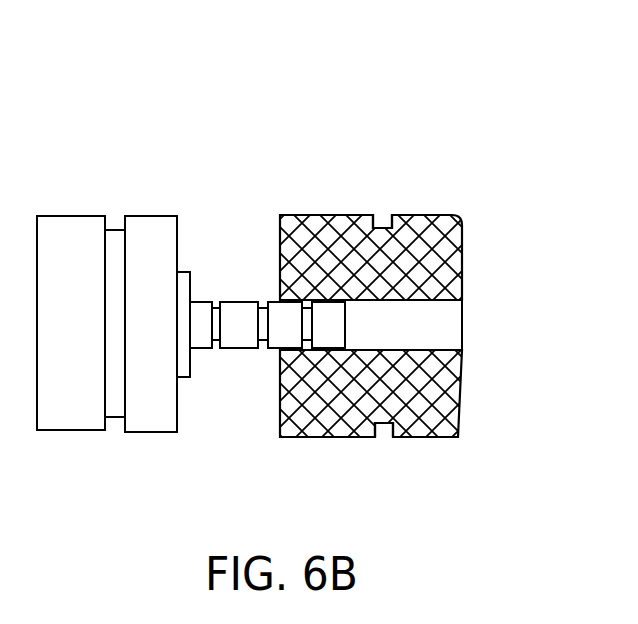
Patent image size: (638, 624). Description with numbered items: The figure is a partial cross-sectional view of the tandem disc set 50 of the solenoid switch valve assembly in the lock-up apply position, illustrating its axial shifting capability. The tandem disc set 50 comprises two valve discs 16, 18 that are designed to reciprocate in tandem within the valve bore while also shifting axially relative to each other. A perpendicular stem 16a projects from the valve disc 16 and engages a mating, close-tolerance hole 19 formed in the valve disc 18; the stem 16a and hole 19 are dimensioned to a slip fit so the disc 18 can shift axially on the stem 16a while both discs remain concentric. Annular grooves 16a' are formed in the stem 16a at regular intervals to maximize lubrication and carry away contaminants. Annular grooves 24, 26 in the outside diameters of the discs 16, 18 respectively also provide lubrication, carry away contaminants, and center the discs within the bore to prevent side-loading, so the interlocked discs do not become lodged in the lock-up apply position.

The tandem disc set 50 is at (202, 140).
The valve disc 16 is at (93, 333).
The annular groove 24 is at (115, 425).
The stem 16a is at (267, 384).
The annular grooves 16a' is at (262, 258).
The valve disc 18 is at (463, 392).
The hole 19 is at (457, 316).
The annular groove 26 is at (383, 437).